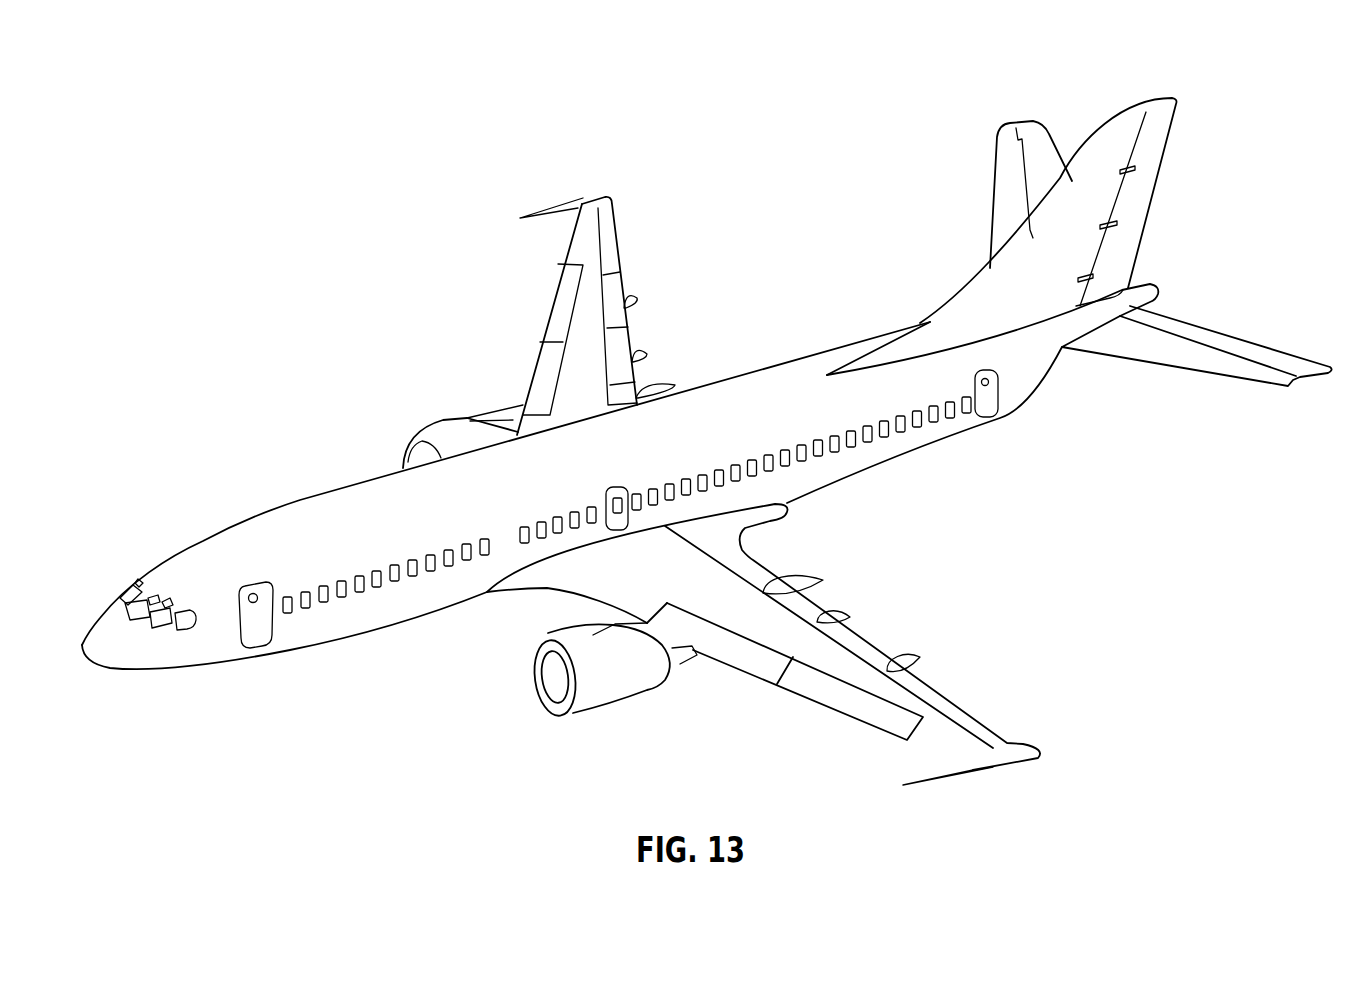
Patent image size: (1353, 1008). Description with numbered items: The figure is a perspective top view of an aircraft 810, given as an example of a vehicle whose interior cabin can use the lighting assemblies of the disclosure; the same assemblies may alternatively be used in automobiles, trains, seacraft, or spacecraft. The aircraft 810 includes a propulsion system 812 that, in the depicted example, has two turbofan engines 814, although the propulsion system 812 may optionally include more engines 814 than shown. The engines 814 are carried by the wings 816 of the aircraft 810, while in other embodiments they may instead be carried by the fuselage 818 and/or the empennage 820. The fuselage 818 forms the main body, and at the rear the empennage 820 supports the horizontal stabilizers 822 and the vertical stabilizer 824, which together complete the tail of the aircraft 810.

The aircraft 810 is at (368, 168).
The propulsion system 812 is at (503, 772).
The turbofan engines 814 is at (450, 420).
The wings 816 is at (590, 205).
The fuselage 818 is at (340, 621).
The empennage 820 is at (872, 310).
The horizontal stabilizers 822 is at (1033, 137).
The vertical stabilizer 824 is at (1133, 113).